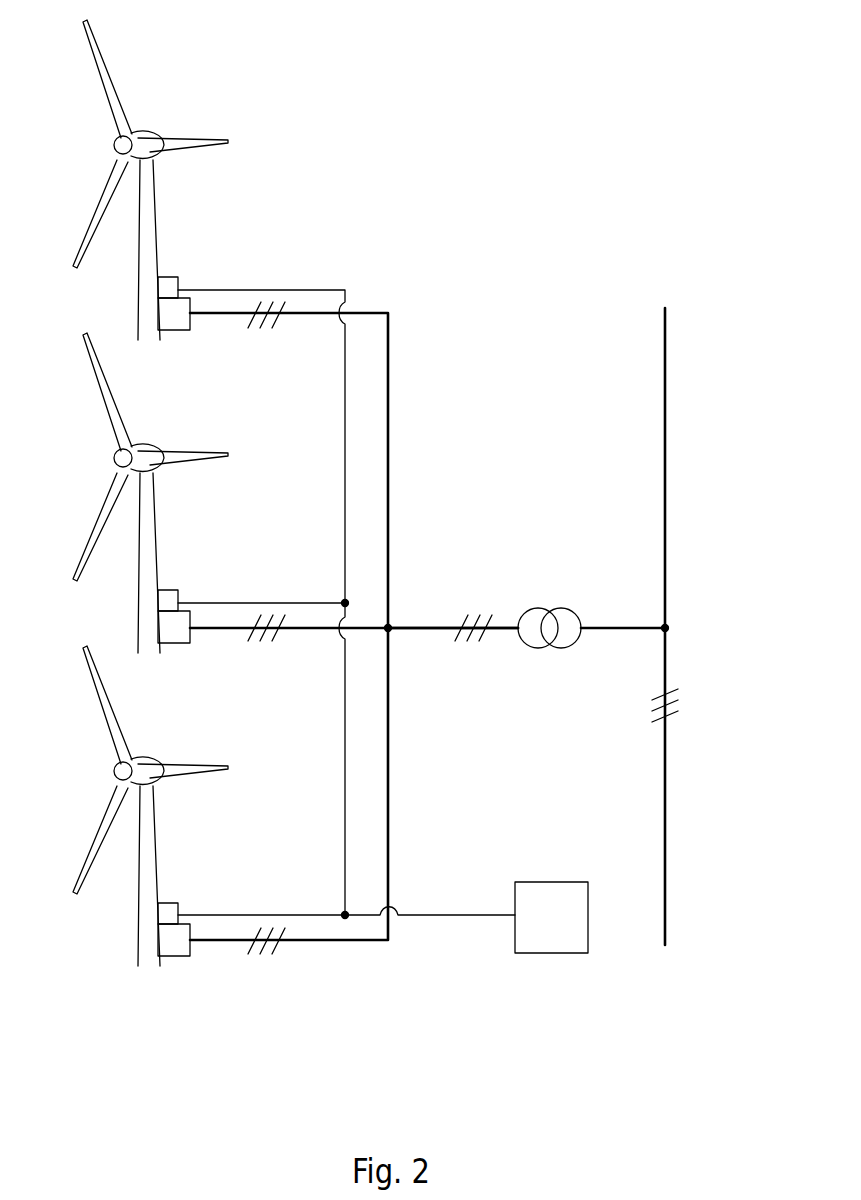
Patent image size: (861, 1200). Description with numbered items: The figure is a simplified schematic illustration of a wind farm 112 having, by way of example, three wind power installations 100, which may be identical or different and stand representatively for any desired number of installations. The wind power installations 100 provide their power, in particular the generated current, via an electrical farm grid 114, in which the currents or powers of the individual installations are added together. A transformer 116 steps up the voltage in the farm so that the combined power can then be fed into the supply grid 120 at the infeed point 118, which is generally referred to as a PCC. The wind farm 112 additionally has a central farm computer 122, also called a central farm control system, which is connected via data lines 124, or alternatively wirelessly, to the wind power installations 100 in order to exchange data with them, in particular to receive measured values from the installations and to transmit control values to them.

The wind power installation 100 is at (145, 245).
The wind farm 112 is at (500, 190).
The electrical farm grid 114 is at (412, 626).
The transformer 116 is at (552, 586).
The infeed point 118 is at (672, 616).
The supply grid 120 is at (665, 377).
The central farm computer 122 is at (543, 880).
The data line 124 is at (345, 758).